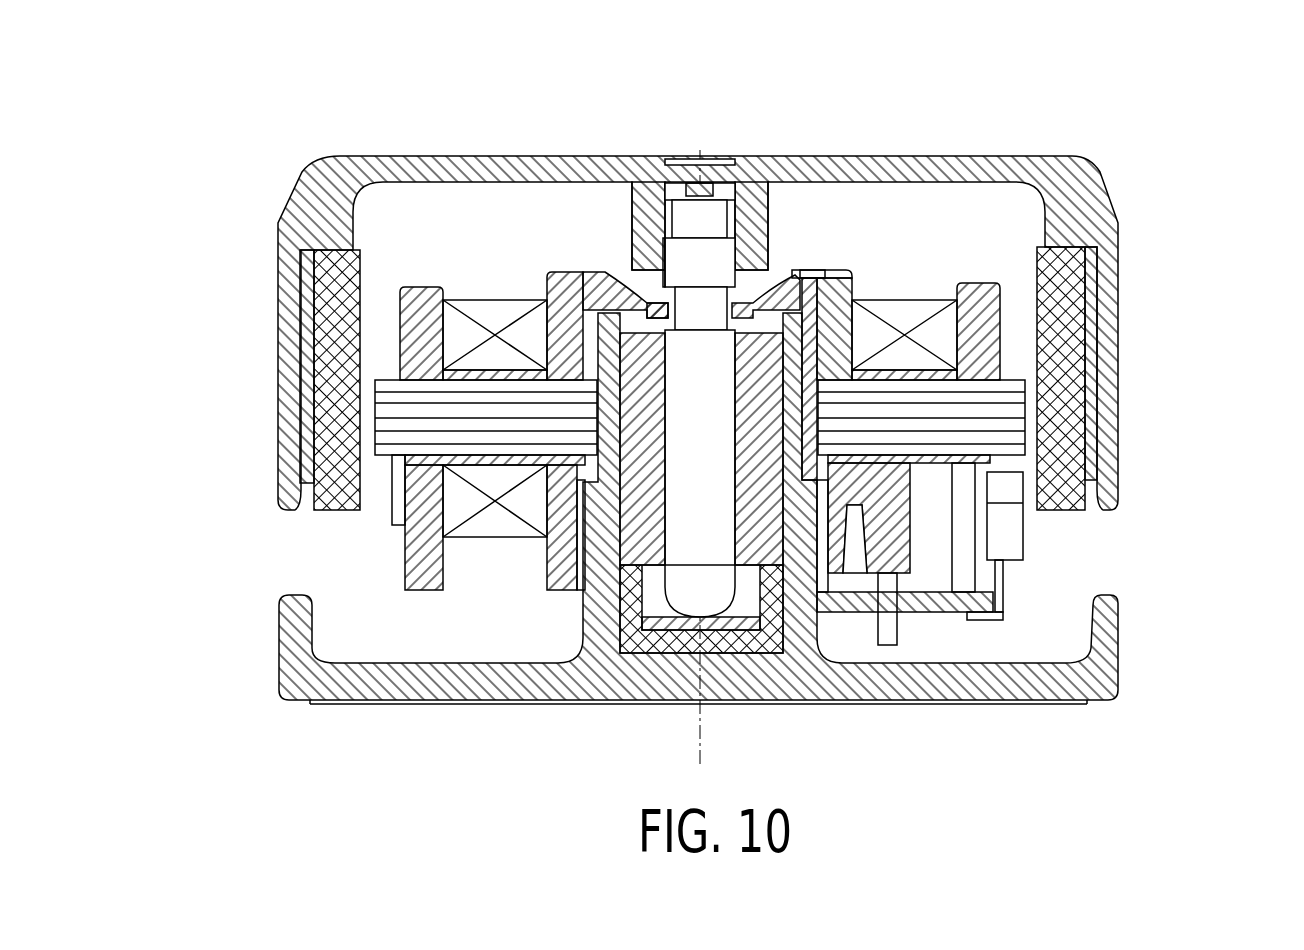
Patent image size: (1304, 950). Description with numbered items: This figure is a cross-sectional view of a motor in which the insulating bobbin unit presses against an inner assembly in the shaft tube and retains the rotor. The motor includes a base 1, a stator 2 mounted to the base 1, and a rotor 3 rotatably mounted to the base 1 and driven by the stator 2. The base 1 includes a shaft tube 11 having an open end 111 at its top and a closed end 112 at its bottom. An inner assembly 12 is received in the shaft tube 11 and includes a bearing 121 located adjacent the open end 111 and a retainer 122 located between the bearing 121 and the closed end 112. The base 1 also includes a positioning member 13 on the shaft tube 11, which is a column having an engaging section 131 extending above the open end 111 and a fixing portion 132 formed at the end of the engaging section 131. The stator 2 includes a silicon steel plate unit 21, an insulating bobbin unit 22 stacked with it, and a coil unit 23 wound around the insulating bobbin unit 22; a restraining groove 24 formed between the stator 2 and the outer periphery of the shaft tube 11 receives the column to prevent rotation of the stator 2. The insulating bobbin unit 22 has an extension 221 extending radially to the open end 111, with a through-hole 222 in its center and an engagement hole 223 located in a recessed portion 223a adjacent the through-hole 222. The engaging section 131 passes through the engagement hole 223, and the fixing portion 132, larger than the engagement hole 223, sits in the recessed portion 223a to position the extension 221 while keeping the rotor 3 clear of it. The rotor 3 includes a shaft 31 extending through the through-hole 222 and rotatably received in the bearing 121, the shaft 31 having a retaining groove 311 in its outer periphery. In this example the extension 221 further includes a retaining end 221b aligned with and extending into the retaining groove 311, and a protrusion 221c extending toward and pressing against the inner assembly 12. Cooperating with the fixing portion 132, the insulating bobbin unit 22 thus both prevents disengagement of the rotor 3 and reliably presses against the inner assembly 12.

The base 1 is at (760, 584).
The shaft tube 11 is at (810, 573).
The closed end 112 is at (780, 723).
The inner assembly 12 is at (612, 594).
The bearing 121 is at (633, 503).
The retainer 122 is at (627, 618).
The stator 2 is at (658, 328).
The silicon steel plate unit 21 is at (390, 385).
The insulating bobbin unit 22 is at (558, 268).
The coil unit 23 is at (488, 312).
The restraining groove 24 is at (820, 400).
The positioning member 13 is at (907, 328).
The engaging section 131 is at (835, 330).
The fixing portion 132 is at (837, 272).
The rotor 3 is at (755, 392).
The shaft 31 is at (712, 401).
The retaining groove 311 is at (738, 190).
The open end 111 is at (619, 208).
The extension 221 is at (636, 250).
The retaining end 221b is at (705, 161).
The protrusion 221c is at (635, 327).
The through-hole 222 is at (650, 300).
The engagement hole 223 is at (772, 290).
The recessed portion 223a is at (818, 318).